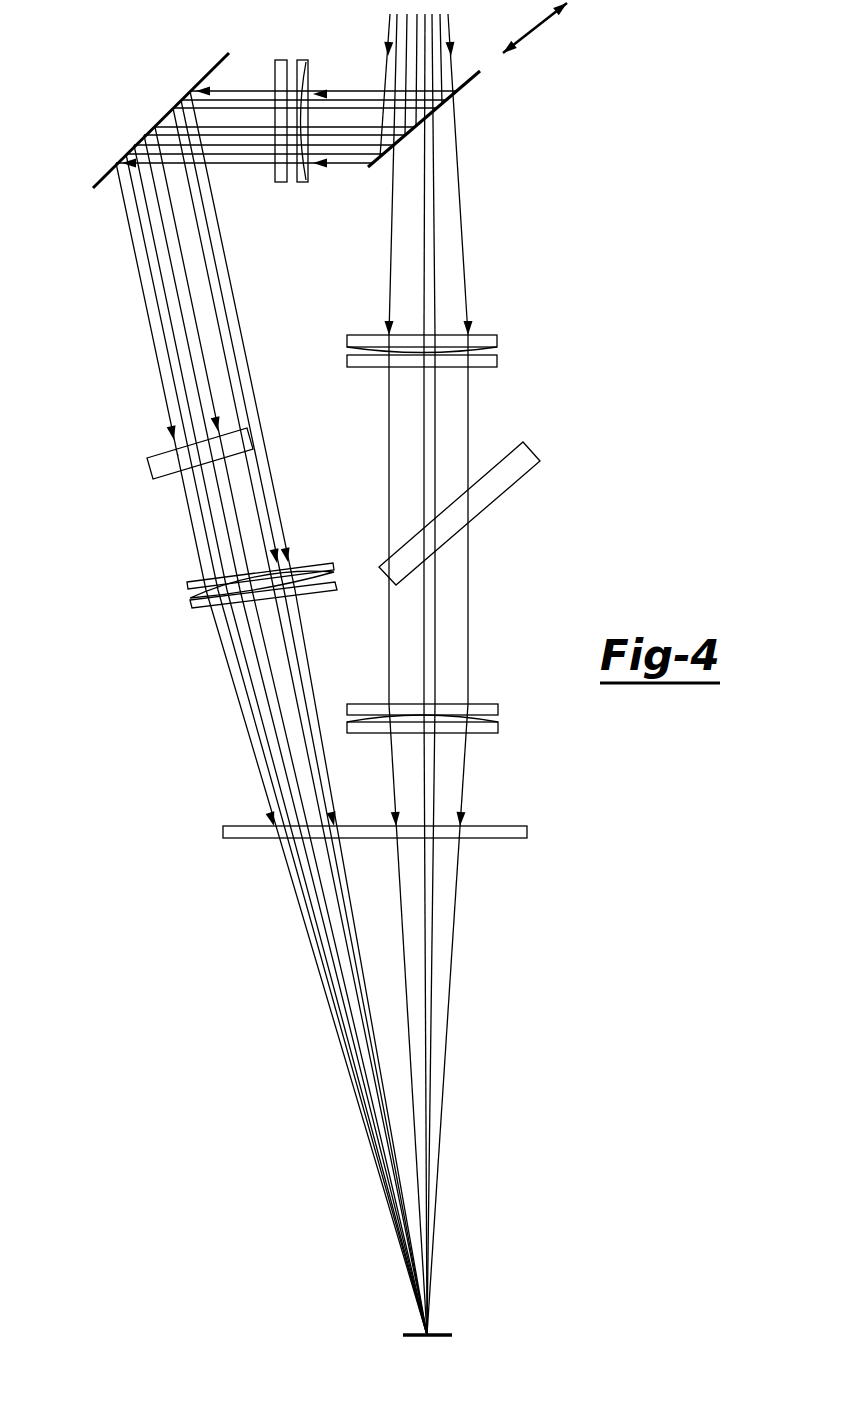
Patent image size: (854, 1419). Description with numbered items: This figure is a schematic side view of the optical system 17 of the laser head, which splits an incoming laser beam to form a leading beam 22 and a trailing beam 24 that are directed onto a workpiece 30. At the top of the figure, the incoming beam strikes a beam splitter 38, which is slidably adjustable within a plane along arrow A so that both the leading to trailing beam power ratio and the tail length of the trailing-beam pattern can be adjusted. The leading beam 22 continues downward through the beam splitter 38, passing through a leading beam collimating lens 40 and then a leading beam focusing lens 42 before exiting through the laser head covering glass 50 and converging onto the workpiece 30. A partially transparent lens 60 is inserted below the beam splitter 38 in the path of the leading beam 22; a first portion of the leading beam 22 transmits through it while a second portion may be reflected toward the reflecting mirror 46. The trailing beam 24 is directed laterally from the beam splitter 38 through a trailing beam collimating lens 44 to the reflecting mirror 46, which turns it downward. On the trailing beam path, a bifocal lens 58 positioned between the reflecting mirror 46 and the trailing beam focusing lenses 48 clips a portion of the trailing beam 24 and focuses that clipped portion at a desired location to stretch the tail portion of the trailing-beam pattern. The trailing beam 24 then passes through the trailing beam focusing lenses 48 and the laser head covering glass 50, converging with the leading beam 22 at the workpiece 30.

The optical system 17 is at (140, 69).
The leading beam 22 is at (460, 202).
The trailing beam 24 is at (355, 96).
The workpiece 30 is at (440, 1327).
The beam splitter 38 is at (467, 85).
The leading beam collimating lens 40 is at (500, 352).
The leading beam focusing lens 42 is at (500, 716).
The trailing beam collimating lens 44 is at (282, 58).
The reflecting mirror 46 is at (98, 178).
The trailing beam focusing lenses 48 is at (190, 597).
The laser head covering glass 50 is at (223, 832).
The bifocal lens 58 is at (147, 458).
The partially transparent lens 60 is at (540, 462).
The arrow A is at (537, 33).